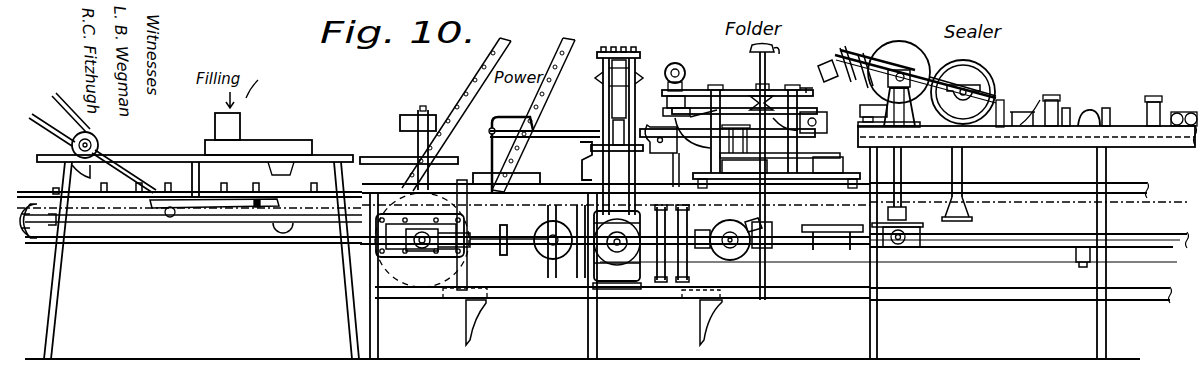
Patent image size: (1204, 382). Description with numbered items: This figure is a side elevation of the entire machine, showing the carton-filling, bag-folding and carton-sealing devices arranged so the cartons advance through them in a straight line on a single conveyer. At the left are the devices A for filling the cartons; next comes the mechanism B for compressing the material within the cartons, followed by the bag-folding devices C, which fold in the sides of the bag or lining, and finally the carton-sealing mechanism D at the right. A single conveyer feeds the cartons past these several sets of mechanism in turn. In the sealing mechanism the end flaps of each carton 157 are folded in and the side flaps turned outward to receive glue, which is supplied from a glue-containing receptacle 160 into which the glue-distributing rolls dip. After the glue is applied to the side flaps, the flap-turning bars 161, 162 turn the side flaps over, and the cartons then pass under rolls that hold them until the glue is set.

The carton-filling devices A is at (198, 236).
The compressing mechanism B is at (617, 153).
The bag-folding devices C is at (751, 172).
The carton-sealing mechanism D is at (998, 199).
The carton 157 is at (992, 80).
The glue-containing receptacle 160 is at (864, 107).
The flap-turning bar 161 is at (1025, 104).
The flap-turning bar 162 is at (1093, 113).